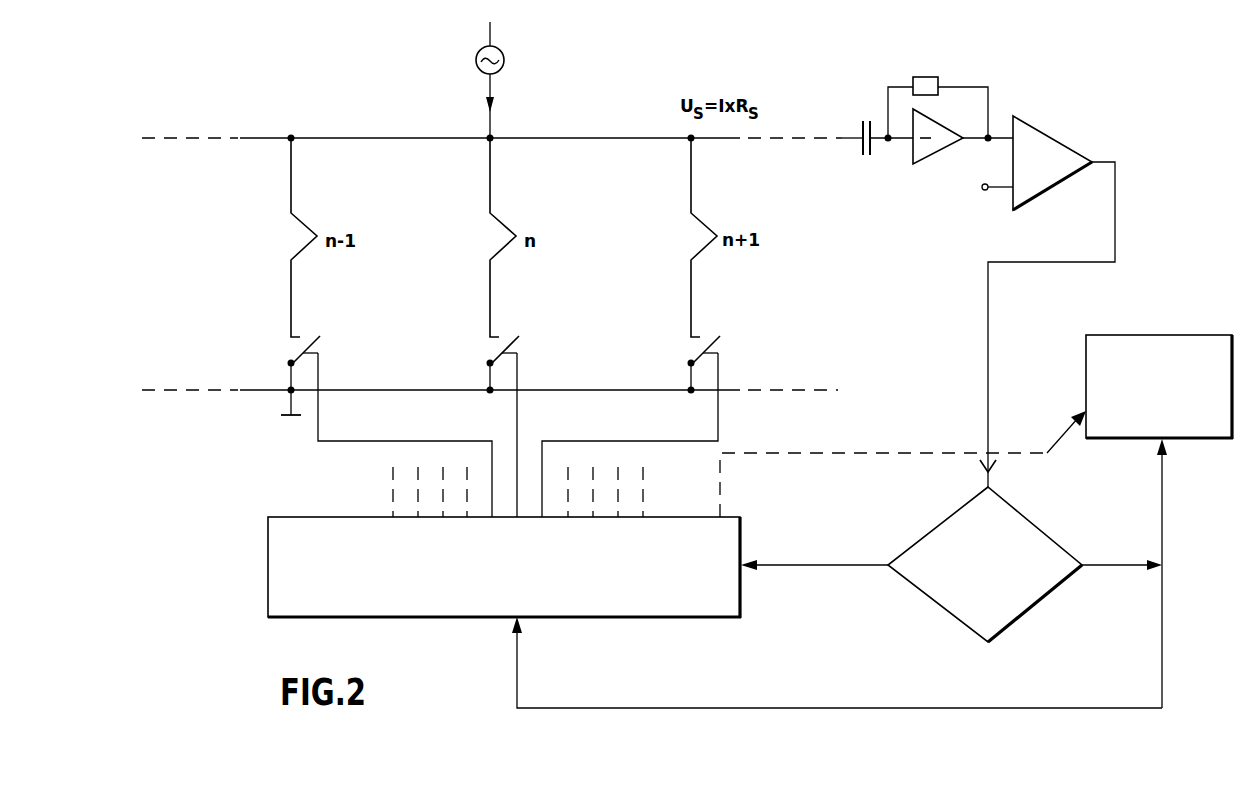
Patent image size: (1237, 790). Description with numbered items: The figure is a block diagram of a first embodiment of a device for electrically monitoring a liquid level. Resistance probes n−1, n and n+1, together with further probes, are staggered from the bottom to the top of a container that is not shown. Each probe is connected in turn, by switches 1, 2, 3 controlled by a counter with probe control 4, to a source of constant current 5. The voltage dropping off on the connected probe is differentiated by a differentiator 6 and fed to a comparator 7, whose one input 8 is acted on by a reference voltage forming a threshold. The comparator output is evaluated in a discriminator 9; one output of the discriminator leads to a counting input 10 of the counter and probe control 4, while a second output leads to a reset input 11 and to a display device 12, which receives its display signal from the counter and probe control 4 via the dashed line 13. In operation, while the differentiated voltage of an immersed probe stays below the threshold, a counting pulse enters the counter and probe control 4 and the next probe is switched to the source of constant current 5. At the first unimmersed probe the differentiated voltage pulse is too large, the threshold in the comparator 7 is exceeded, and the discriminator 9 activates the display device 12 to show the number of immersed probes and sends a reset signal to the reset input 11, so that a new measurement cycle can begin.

The switch 1 is at (300, 353).
The switch 2 is at (501, 353).
The switch 3 is at (702, 353).
The counter with probe control 4 is at (283, 528).
The source of constant current 5 is at (503, 57).
The differentiator 6 is at (966, 81).
The comparator 7 is at (1038, 132).
The input 8 is at (1009, 190).
The discriminator 9 is at (1008, 518).
The counting input 10 is at (808, 567).
The reset input 11 is at (516, 652).
The display device 12 is at (1134, 343).
The dashed line 13 is at (877, 452).